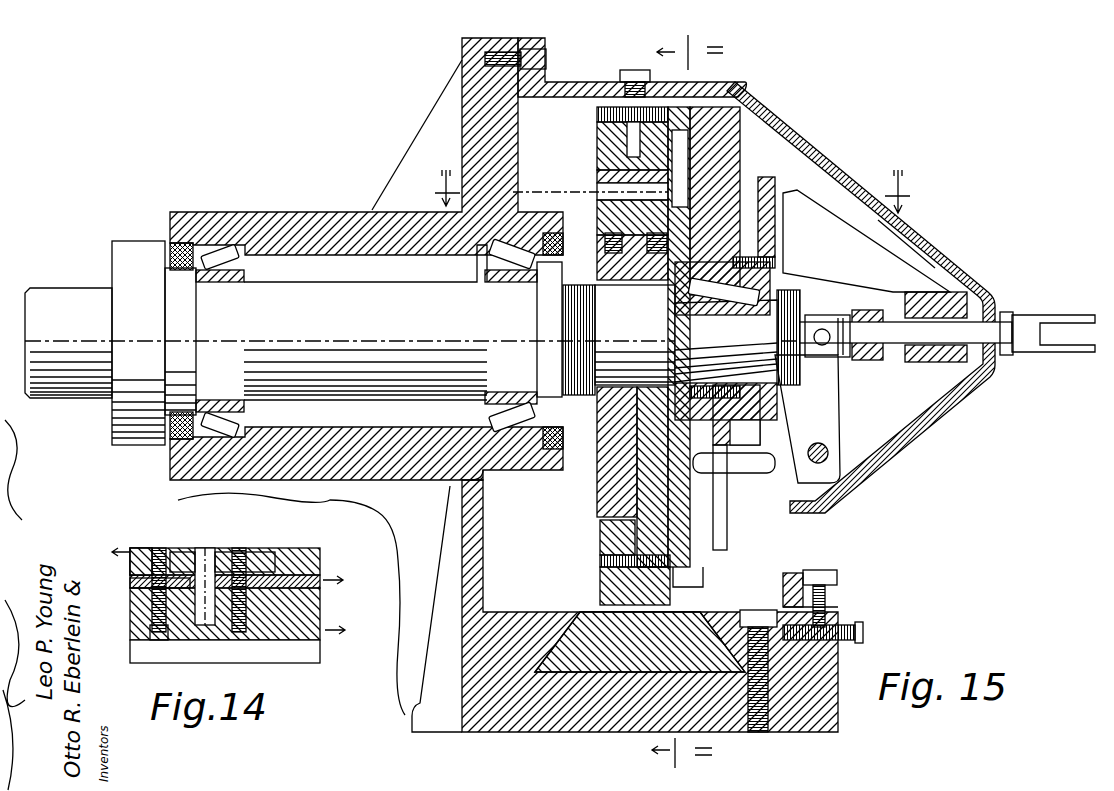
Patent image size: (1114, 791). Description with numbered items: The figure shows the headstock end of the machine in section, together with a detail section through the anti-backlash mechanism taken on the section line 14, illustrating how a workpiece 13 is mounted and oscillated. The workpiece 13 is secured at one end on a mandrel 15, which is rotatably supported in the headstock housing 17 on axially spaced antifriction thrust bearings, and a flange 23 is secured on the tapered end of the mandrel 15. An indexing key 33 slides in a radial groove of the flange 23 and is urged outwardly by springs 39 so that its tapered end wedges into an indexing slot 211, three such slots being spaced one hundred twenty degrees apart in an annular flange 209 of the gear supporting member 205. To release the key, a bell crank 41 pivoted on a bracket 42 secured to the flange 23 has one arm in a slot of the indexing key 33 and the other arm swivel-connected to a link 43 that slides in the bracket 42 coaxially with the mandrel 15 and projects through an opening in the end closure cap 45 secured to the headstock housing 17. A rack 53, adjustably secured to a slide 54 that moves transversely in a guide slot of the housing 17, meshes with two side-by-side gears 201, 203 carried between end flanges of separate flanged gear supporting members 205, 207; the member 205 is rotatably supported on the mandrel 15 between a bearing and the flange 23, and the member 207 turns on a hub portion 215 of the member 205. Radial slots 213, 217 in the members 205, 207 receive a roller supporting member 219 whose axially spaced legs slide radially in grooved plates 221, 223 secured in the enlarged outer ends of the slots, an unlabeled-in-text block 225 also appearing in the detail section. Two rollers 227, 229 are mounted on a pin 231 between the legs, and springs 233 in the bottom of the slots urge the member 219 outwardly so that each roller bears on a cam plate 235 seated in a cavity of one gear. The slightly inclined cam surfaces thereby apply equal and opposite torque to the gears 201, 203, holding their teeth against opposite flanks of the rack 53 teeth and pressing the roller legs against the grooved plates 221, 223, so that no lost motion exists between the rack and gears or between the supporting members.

In FIG. 15, the workpiece 13 is at (664, 401).
In FIG. 15, the section line 14 is at (663, 191).
In FIG. 15, the mandrel 15 is at (342, 306).
In FIG. 15, the headstock housing 17 is at (392, 186).
In FIG. 15, the flange 23 is at (710, 152).
In FIG. 15, the indexing key 33 is at (700, 500).
In FIG. 15, the springs 39 is at (734, 429).
In FIG. 15, the bell crank 41 is at (832, 424).
In FIG. 15, the bracket 42 is at (813, 226).
In FIG. 15, the link 43 is at (992, 330).
In FIG. 15, the end closure cap 45 is at (900, 236).
In FIG. 15, the rack 53 is at (600, 582).
In FIG. 15, the slide 54 is at (690, 604).
In FIG. 15, the gear 201 is at (668, 105).
In FIG. 15, the gear 203 is at (597, 118).
In FIG. 15, the flanged gear supporting member 205 is at (690, 515).
In FIG. 14, the flanged gear supporting member 205 is at (322, 603).
In FIG. 15, the flanged gear supporting member 207 is at (600, 484).
In FIG. 14, the flanged gear supporting member 207 is at (300, 548).
In FIG. 15, the annular flange 209 is at (745, 92).
In FIG. 15, the indexing slots 211 is at (705, 576).
In FIG. 15, the radial slot 213 is at (660, 255).
In FIG. 14, the radial slot 213 is at (245, 640).
In FIG. 15, the hub portion 215 is at (616, 385).
In FIG. 15, the radial slot 217 is at (597, 262).
In FIG. 14, the radial slot 217 is at (172, 550).
In FIG. 15, the roller supporting member 219 is at (597, 177).
In FIG. 14, the roller supporting member 219 is at (195, 550).
In FIG. 15, the grooved plate 221 is at (754, 222).
In FIG. 14, the grooved plate 221 is at (172, 645).
In FIG. 14, the grooved plate 223 is at (250, 552).
In FIG. 15, the block 225 is at (597, 146).
In FIG. 15, the roller 227 is at (597, 213).
In FIG. 14, the roller 227 is at (135, 585).
In FIG. 15, the roller 229 is at (670, 177).
In FIG. 14, the roller 229 is at (165, 640).
In FIG. 15, the pin 231 is at (590, 195).
In FIG. 14, the pin 231 is at (215, 548).
In FIG. 15, the springs 233 is at (701, 337).
In FIG. 14, the cam plates 235 is at (320, 578).